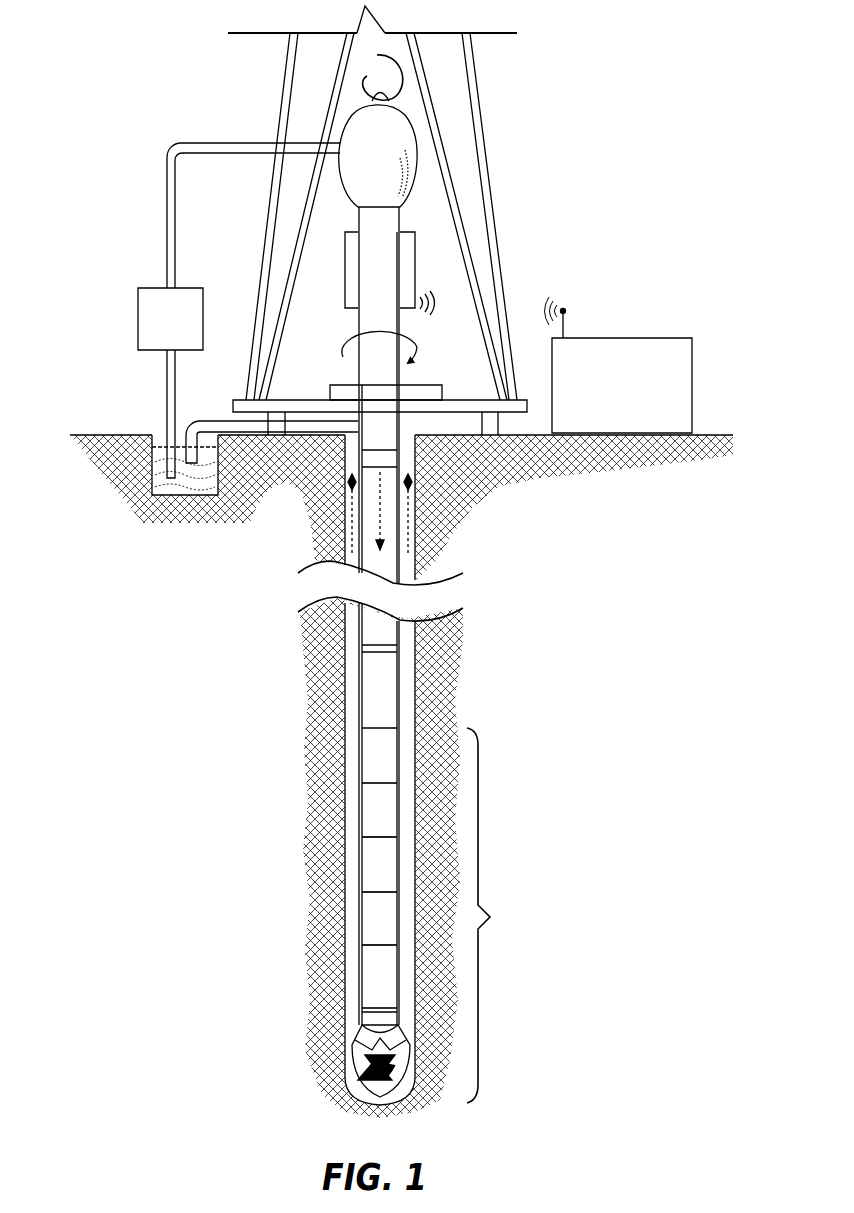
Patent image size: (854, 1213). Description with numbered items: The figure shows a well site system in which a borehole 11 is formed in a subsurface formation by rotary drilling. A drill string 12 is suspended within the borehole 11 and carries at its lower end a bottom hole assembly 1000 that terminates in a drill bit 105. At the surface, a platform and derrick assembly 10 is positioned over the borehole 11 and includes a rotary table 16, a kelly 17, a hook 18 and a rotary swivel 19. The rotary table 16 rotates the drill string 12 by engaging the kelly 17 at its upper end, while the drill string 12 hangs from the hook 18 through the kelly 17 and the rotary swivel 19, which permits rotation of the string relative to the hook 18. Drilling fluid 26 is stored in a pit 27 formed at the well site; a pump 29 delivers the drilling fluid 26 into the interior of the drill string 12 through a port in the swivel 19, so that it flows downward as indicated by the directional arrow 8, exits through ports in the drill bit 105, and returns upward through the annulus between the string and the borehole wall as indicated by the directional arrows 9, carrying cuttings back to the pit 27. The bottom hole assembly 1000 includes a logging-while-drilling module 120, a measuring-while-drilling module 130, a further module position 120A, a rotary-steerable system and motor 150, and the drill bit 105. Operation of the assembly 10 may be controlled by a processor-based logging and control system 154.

The platform and derrick assembly 10 is at (502, 120).
The hook 18 is at (378, 60).
The rotary swivel 19 is at (355, 184).
The kelly 17 is at (366, 385).
The rotary table 16 is at (424, 387).
The drill string 12 is at (380, 440).
The borehole 11 is at (410, 441).
The directional arrows 9 is at (350, 495).
The directional arrow 8 is at (360, 520).
The pump 29 is at (155, 352).
The pit 27 is at (158, 440).
The drilling fluid 26 is at (182, 490).
The logging and control system 154 is at (608, 338).
The logging-while-drilling module 120 is at (367, 812).
The measuring-while-drilling module 130 is at (360, 866).
The additional LWD and/or MWD module 120A is at (367, 920).
The rotary-steerable system and motor 150 is at (367, 975).
The drill bit 105 is at (357, 1053).
The bottom hole assembly 1000 is at (525, 915).